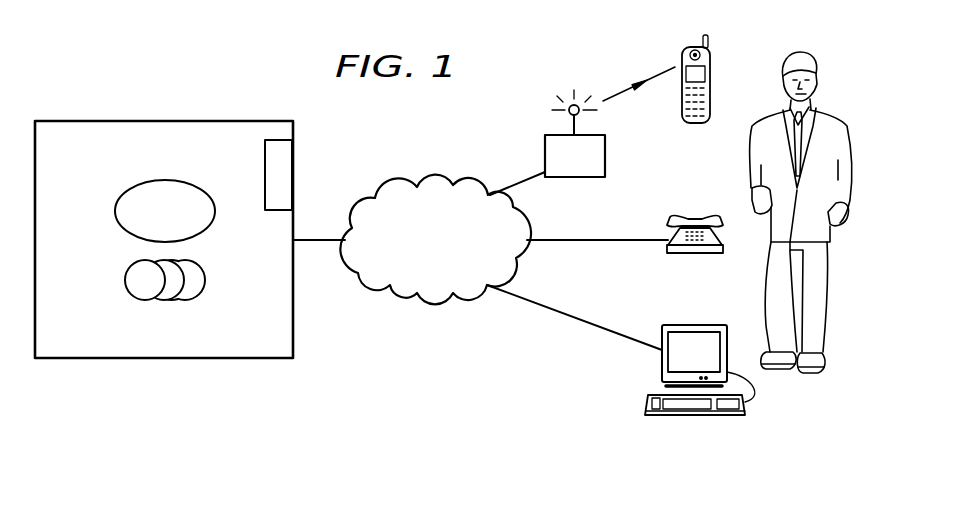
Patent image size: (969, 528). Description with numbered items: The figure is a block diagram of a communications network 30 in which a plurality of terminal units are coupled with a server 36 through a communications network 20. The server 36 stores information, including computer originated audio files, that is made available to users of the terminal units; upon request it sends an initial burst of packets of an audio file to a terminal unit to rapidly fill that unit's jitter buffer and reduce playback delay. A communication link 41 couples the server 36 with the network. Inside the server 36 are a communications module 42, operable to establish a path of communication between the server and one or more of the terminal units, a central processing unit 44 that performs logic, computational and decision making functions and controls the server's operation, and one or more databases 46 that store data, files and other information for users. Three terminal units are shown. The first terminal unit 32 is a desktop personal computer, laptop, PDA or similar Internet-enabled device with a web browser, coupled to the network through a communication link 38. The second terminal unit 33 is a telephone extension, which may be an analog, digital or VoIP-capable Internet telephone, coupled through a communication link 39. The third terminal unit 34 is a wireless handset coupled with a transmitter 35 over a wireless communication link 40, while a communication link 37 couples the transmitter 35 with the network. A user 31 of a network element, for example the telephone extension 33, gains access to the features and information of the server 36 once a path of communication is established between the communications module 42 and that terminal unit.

The communications network 30 is at (194, 91).
The server 36 is at (293, 307).
The communications module 42 is at (279, 211).
The central processing unit 44 is at (115, 211).
The database 46 is at (125, 280).
The communications network 20 is at (434, 175).
The communication link 41 is at (318, 240).
The communication link 37 is at (518, 182).
The communication link 39 is at (588, 240).
The communication link 38 is at (575, 320).
The wireless communication link 40 is at (638, 84).
The transmitter 35 is at (607, 157).
The wireless handset 34 is at (710, 82).
The telephone extension 33 is at (695, 215).
The personal computer 32 is at (696, 325).
The user 31 is at (805, 52).